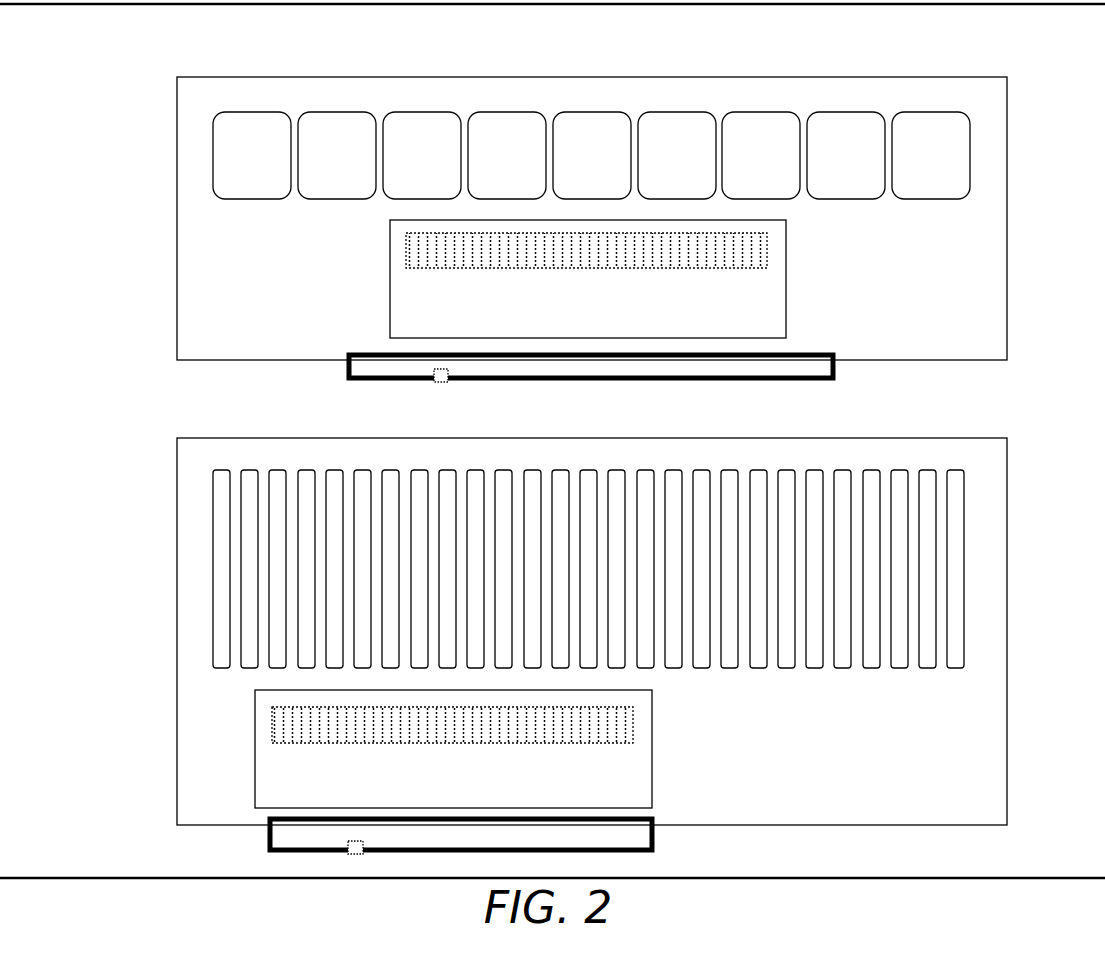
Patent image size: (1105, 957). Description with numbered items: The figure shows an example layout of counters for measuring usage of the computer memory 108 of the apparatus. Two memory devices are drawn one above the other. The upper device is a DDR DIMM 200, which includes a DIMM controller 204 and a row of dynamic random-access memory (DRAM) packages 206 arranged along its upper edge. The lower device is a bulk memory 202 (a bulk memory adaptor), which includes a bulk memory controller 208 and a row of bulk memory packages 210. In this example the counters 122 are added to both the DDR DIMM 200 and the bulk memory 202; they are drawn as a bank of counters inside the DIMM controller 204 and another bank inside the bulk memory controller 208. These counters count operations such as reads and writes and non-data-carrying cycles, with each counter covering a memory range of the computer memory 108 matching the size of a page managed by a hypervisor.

The computer memory 108 is at (538, 61).
The counters 122 is at (778, 257).
The DDR DIMM 200 is at (180, 349).
The bulk memory 202 is at (875, 766).
The DIMM controller 204 is at (377, 276).
The dynamic random-access memory (DRAM) packages 206 is at (206, 182).
The bulk memory controller 208 is at (264, 774).
The bulk memory packages 210 is at (206, 567).